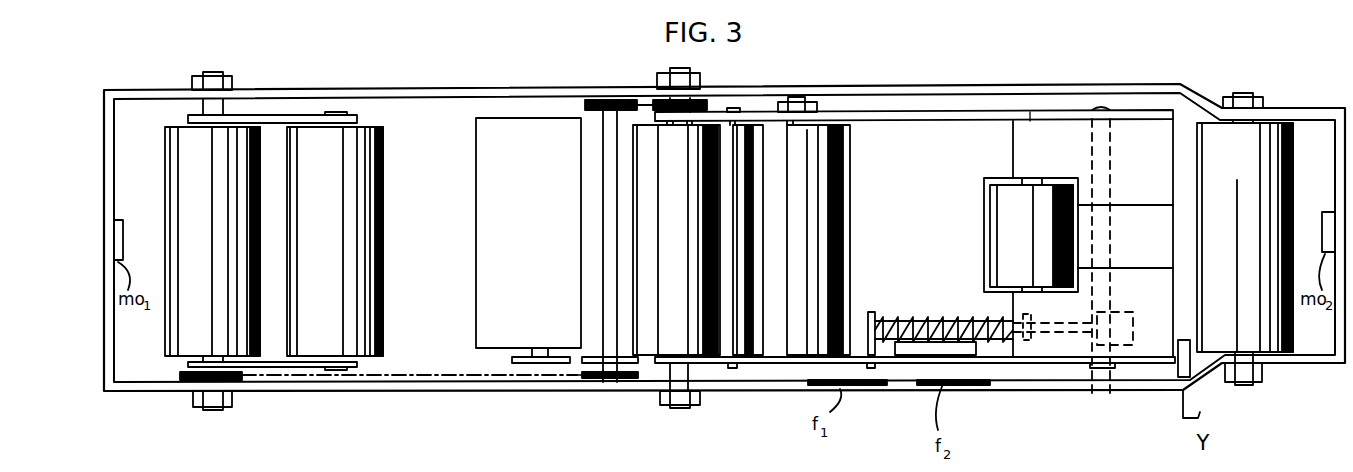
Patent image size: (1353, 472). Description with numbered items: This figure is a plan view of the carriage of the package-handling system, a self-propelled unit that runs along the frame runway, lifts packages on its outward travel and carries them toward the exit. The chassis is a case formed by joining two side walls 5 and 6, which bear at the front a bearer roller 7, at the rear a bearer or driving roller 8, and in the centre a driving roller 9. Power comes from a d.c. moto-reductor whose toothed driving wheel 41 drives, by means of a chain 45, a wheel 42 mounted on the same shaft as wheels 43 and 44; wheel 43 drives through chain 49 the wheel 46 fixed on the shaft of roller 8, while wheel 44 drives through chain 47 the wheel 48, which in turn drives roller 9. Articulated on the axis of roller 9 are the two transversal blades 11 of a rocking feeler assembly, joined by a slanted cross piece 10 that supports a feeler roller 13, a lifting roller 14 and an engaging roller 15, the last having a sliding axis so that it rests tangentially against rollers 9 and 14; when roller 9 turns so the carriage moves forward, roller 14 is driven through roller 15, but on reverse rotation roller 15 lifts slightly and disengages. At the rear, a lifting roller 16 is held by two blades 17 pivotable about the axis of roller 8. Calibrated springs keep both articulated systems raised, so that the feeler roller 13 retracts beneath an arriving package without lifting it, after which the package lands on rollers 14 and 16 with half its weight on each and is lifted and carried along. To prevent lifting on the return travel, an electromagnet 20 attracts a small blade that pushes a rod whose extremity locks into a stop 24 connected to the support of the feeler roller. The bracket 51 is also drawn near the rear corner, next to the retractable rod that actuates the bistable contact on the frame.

The side wall 5 is at (908, 384).
The side wall 6 is at (957, 93).
The bearer roller 7 is at (1255, 206).
The driving roller 8 is at (172, 253).
The driving roller 9 is at (652, 146).
The slanted cross piece 10 is at (1133, 340).
The transversal blade 11 is at (1030, 112).
The feeler roller 13 is at (992, 248).
The lifting roller 14 is at (830, 242).
The engaging roller 15 is at (735, 242).
The lifting roller 16 is at (355, 245).
The blades 17 is at (272, 363).
The electromagnet 20 is at (962, 367).
The stop 24 is at (1110, 392).
The toothed driving wheel 41 is at (524, 357).
The wheel 42 is at (587, 356).
The wheel 43 is at (589, 381).
The wheel 44 is at (595, 100).
The chain 45 is at (577, 377).
The wheel 46 is at (182, 381).
The chain 47 is at (641, 104).
The wheel 48 is at (705, 100).
The chain 49 is at (415, 378).
The bracket 51 is at (1195, 362).